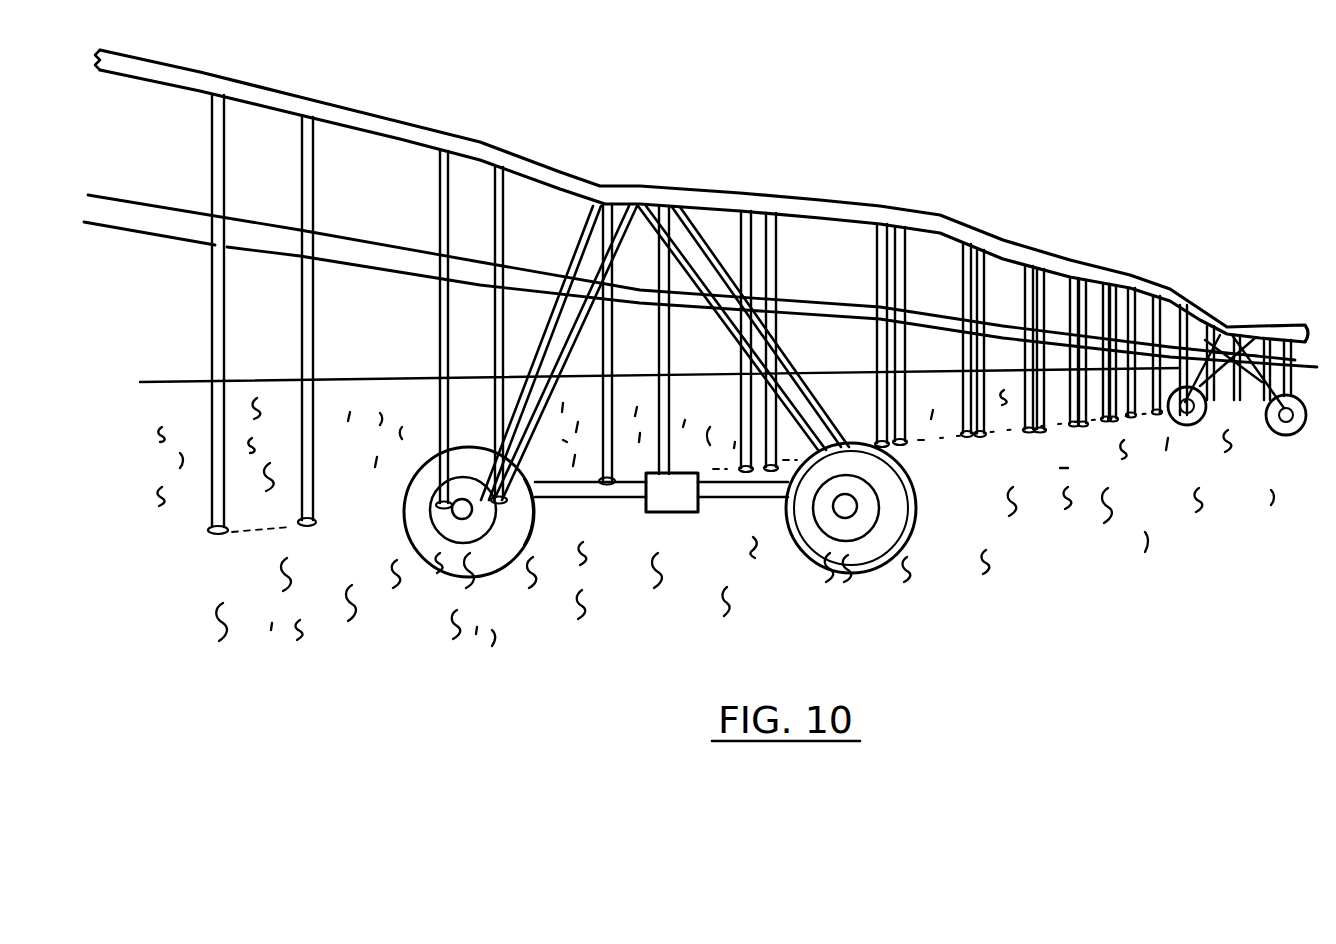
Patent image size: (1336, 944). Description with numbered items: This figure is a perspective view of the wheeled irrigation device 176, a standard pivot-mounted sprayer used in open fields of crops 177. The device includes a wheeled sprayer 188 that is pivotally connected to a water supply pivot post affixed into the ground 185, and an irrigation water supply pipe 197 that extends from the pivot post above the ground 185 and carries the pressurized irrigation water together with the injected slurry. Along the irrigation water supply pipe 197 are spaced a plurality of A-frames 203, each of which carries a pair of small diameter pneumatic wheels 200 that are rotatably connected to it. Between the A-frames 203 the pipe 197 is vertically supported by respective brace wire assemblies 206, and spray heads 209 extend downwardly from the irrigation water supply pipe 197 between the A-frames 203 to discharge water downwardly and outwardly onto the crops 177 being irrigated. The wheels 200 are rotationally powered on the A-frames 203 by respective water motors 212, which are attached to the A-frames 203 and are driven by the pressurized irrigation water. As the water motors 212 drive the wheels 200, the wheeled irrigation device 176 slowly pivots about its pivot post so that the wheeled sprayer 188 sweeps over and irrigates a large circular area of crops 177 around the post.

The wheeled irrigation device 176 is at (1080, 112).
The crops 177 is at (1136, 552).
The ground 185 is at (597, 672).
The wheeled sprayer 188 is at (985, 200).
The irrigation water supply pipe 197 is at (400, 121).
The pneumatic wheels 200 is at (403, 503).
The A-frames 203 is at (708, 240).
The brace wire assemblies 206 is at (345, 243).
The spray heads 209 is at (298, 529).
The water motors 212 is at (662, 512).